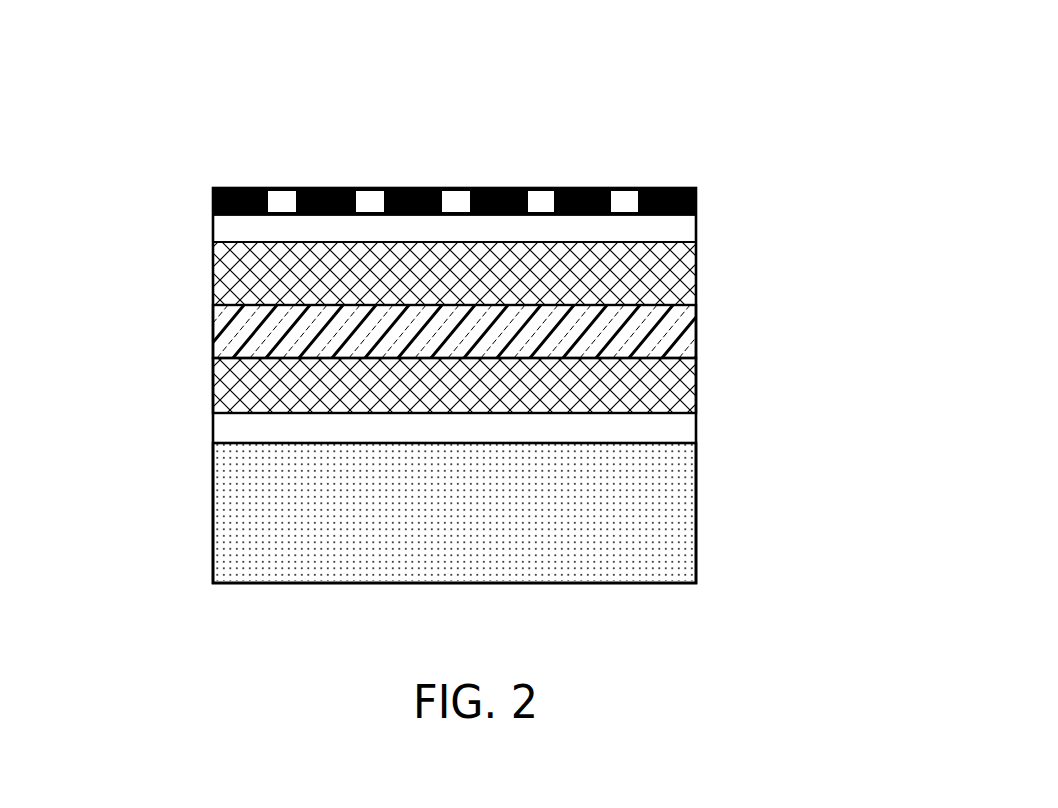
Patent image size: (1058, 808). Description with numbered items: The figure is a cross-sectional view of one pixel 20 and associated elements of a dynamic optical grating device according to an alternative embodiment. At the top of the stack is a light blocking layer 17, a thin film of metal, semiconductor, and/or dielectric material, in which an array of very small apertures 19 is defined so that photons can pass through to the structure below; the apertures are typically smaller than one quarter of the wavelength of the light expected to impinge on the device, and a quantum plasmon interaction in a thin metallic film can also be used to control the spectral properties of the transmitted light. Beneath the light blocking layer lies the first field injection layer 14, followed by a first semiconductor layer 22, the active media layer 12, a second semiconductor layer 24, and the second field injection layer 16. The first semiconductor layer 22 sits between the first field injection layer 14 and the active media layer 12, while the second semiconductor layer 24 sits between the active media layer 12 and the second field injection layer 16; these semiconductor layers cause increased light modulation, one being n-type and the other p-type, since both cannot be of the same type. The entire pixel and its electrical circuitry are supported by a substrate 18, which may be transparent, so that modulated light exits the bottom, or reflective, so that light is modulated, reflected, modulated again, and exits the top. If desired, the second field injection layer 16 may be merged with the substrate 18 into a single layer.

The pixel 20 is at (597, 141).
The light blocking layer 17 is at (232, 186).
The apertures 19 is at (453, 187).
The first field injection layer 14 is at (697, 225).
The first semiconductor layer 22 is at (211, 273).
The active media layer 12 is at (696, 337).
The second semiconductor layer 24 is at (211, 393).
The second field injection layer 16 is at (696, 430).
The substrate 18 is at (211, 532).